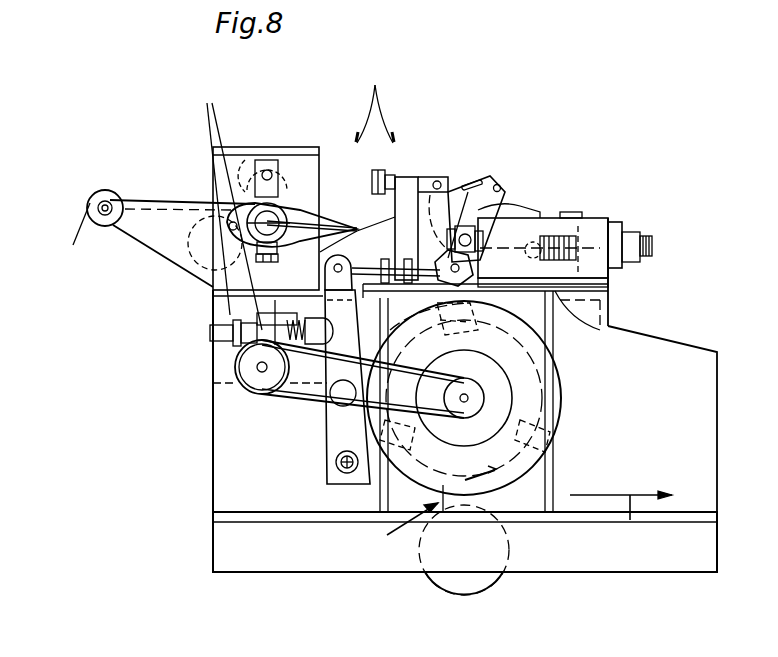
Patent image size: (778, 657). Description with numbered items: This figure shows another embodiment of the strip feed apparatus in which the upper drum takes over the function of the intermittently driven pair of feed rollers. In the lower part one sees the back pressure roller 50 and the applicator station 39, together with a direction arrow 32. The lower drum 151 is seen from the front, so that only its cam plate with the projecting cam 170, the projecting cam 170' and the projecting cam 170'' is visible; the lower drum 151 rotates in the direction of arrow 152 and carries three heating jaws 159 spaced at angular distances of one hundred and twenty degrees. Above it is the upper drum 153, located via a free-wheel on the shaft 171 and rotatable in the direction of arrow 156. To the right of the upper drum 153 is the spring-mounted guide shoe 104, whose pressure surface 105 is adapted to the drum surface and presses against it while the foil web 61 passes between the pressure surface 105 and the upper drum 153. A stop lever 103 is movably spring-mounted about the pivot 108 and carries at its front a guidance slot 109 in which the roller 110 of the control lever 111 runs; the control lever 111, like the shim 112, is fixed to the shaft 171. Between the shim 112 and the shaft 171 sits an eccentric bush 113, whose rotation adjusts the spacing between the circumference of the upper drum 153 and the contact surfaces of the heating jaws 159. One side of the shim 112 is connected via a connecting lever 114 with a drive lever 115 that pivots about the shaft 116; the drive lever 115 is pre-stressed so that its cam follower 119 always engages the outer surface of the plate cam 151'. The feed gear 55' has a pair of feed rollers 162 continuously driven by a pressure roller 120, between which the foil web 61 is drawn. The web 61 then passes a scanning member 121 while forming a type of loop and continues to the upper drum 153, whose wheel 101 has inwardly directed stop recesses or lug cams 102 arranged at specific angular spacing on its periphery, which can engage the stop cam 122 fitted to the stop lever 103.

The feed rollers 162 is at (250, 173).
The feed gear 55' is at (375, 101).
The foil web 61 is at (88, 211).
The pressure roller 120 is at (200, 236).
The scanning member 121 is at (292, 235).
The connecting lever 114 is at (326, 270).
The shaft 171 is at (395, 246).
The drive lever 115 is at (337, 430).
The shaft 116 is at (337, 470).
The cam follower 119 is at (323, 407).
The projecting cam 170 is at (349, 379).
The lower drum 151 is at (497, 398).
The plate cam 151' is at (538, 398).
The projecting cam 170'' is at (524, 332).
The heating jaws 159 is at (542, 435).
The projecting cam 170' is at (530, 515).
The arrow 152 is at (452, 490).
The back pressure roller 50 is at (490, 583).
The applicator station 39 is at (396, 524).
The direction arrow 32 is at (621, 519).
The wheel 101 is at (432, 190).
The pivot 108 is at (437, 180).
The lug cam 102 is at (467, 168).
The stop lever 103 is at (473, 180).
The guidance slot 109 is at (485, 183).
The stop cam 122 is at (507, 187).
The roller 110 is at (492, 200).
The control lever 111 is at (500, 207).
The upper drum 153 is at (584, 211).
The guide shoe 104 is at (600, 223).
The pressure surface 105 is at (638, 236).
The shim 112 is at (641, 262).
The arrow 156 is at (573, 281).
The eccentric bush 113 is at (535, 301).